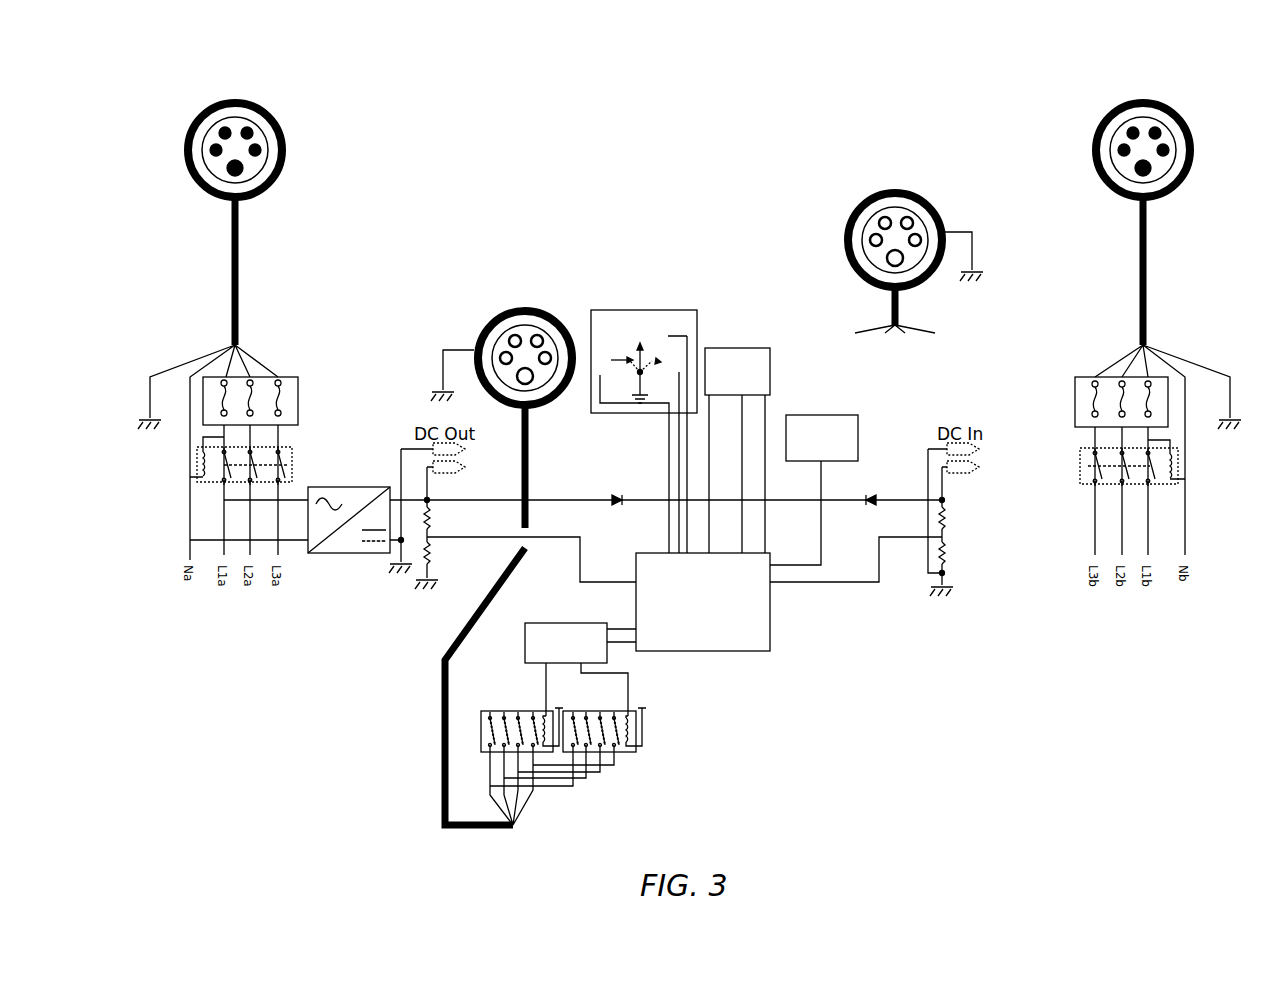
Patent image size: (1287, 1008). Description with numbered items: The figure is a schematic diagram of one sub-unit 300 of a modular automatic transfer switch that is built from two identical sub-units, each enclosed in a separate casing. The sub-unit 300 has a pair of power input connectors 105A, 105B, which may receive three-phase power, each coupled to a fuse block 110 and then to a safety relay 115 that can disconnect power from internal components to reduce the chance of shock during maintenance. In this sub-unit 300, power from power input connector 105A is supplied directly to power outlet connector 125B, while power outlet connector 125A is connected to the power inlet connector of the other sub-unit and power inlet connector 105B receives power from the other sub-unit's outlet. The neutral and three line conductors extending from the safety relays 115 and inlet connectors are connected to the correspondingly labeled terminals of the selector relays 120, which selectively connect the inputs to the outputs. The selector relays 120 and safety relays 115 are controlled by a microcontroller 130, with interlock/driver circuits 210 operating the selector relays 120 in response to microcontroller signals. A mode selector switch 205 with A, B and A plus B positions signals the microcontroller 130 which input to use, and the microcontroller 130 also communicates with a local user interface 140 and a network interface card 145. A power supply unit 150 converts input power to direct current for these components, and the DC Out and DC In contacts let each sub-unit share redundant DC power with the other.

The sub-unit 300 is at (643, 181).
The power input connector 105A is at (233, 103).
The power input connector 105B is at (1137, 104).
The fuse block 110 is at (293, 400).
The safety relay 115 is at (292, 466).
The selector relay 120 is at (657, 712).
The power output connector 125A is at (520, 307).
The power output connector 125B is at (893, 192).
The microcontroller 130 is at (703, 602).
The local user interface 140 is at (814, 490).
The network interface card 145 is at (737, 450).
The power supply unit 150 is at (358, 496).
The mode selector switch 205 is at (630, 312).
The interlock/driver circuit 210 is at (580, 669).